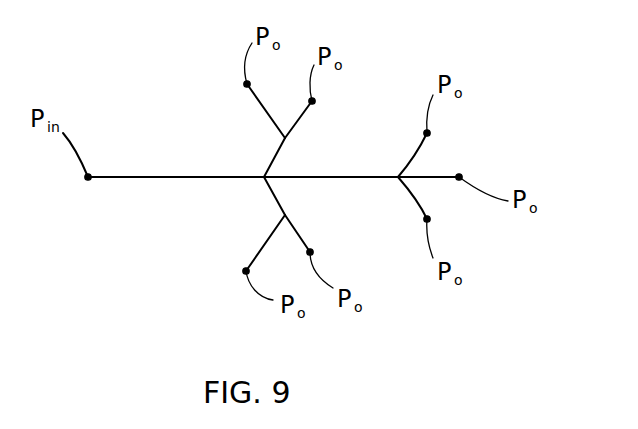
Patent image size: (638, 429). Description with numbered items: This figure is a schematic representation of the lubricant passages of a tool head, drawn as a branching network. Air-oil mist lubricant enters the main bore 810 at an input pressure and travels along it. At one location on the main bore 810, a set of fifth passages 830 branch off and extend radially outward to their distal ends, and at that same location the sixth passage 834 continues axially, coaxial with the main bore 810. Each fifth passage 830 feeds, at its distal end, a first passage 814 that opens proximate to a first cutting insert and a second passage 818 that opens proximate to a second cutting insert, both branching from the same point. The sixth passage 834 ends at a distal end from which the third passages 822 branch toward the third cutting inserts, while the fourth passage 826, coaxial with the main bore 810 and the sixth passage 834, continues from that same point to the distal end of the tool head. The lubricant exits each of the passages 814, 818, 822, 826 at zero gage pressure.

The main bore 810 is at (162, 177).
The first passages 814 is at (255, 97).
The second passages 818 is at (297, 127).
The third passages 822 is at (412, 157).
The fourth passage 826 is at (430, 175).
The fifth passages 830 is at (270, 164).
The sixth passage 834 is at (320, 177).